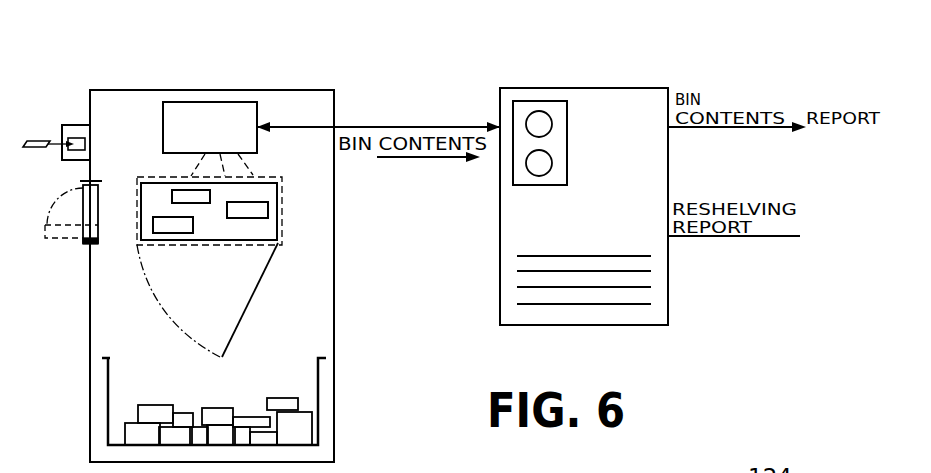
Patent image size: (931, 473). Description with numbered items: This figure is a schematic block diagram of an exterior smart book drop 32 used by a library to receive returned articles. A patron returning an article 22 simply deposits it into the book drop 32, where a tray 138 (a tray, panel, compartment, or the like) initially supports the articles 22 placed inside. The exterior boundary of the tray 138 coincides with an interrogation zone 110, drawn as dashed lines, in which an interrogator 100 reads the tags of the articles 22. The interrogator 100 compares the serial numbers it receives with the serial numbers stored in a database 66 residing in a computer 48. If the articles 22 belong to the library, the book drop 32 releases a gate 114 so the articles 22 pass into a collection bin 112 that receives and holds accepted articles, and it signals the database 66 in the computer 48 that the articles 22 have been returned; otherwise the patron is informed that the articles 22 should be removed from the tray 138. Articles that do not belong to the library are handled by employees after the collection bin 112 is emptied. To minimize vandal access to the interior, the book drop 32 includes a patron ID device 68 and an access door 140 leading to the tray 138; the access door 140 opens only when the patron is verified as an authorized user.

The exterior smart book drop 32 is at (157, 84).
The interrogator 100 is at (207, 102).
The patron ID device 68 is at (63, 127).
The interrogation zone 110 is at (137, 212).
The access door 140 is at (63, 240).
The tray 138 is at (277, 225).
The article 22 is at (167, 170).
The gate 114 is at (244, 311).
The collection bin 112 is at (108, 402).
The computer 48 is at (583, 88).
The database 66 is at (513, 112).